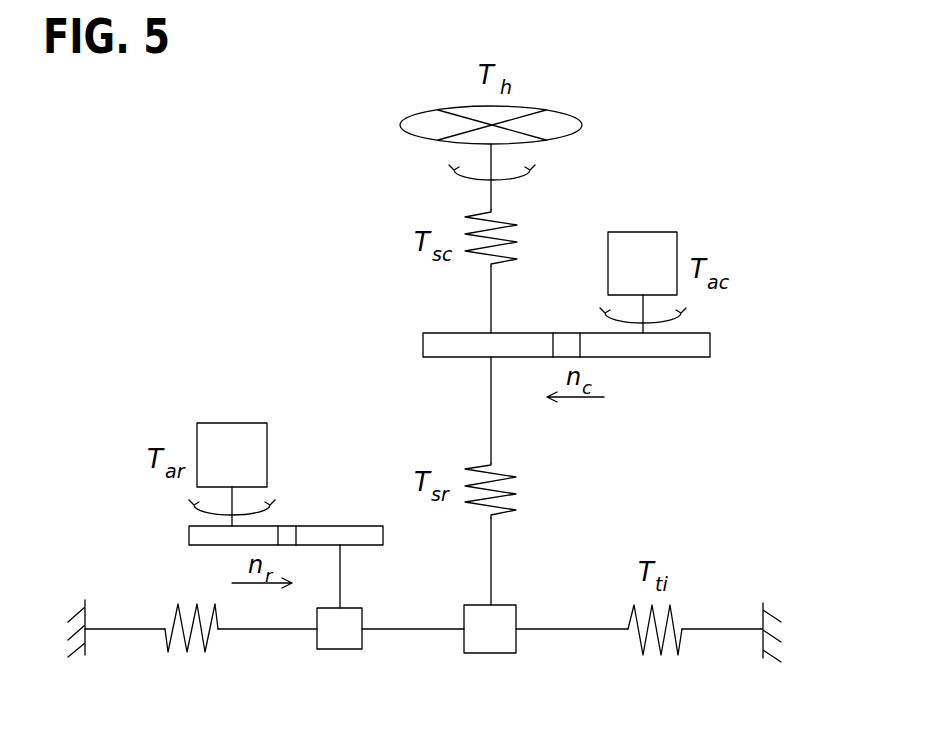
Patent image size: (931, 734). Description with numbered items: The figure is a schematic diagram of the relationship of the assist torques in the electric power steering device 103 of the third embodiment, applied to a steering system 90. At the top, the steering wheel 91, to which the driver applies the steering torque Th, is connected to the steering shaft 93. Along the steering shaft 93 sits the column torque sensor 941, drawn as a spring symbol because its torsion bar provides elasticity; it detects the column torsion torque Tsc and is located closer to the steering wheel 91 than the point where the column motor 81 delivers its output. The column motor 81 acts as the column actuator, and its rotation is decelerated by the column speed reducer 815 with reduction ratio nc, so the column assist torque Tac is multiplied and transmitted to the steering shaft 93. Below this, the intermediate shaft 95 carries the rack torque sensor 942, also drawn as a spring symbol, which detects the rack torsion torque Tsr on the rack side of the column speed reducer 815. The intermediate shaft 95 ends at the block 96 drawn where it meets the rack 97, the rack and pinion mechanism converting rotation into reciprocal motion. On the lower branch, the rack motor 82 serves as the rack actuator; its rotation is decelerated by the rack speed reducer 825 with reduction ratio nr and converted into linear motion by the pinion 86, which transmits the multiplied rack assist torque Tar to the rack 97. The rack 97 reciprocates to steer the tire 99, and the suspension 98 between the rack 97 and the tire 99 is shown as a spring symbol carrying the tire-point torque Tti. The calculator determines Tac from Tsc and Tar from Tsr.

The steering system 90 is at (705, 130).
The steering wheel 91 is at (449, 107).
The column torque sensor 941 is at (517, 237).
The steering shaft 93 is at (488, 304).
The column motor 81 is at (648, 243).
The column speed reducer 815 is at (686, 349).
The intermediate shaft 95 is at (488, 411).
The rack torque sensor 942 is at (515, 489).
The pinion / rack coupling 96 is at (490, 643).
The rack 97 is at (590, 633).
The suspension 98 is at (185, 651).
The tire 99 is at (88, 643).
The rack motor 82 is at (234, 432).
The rack speed reducer 825 is at (330, 533).
The pinion 86 is at (340, 643).
The electric power steering device 103 is at (349, 306).